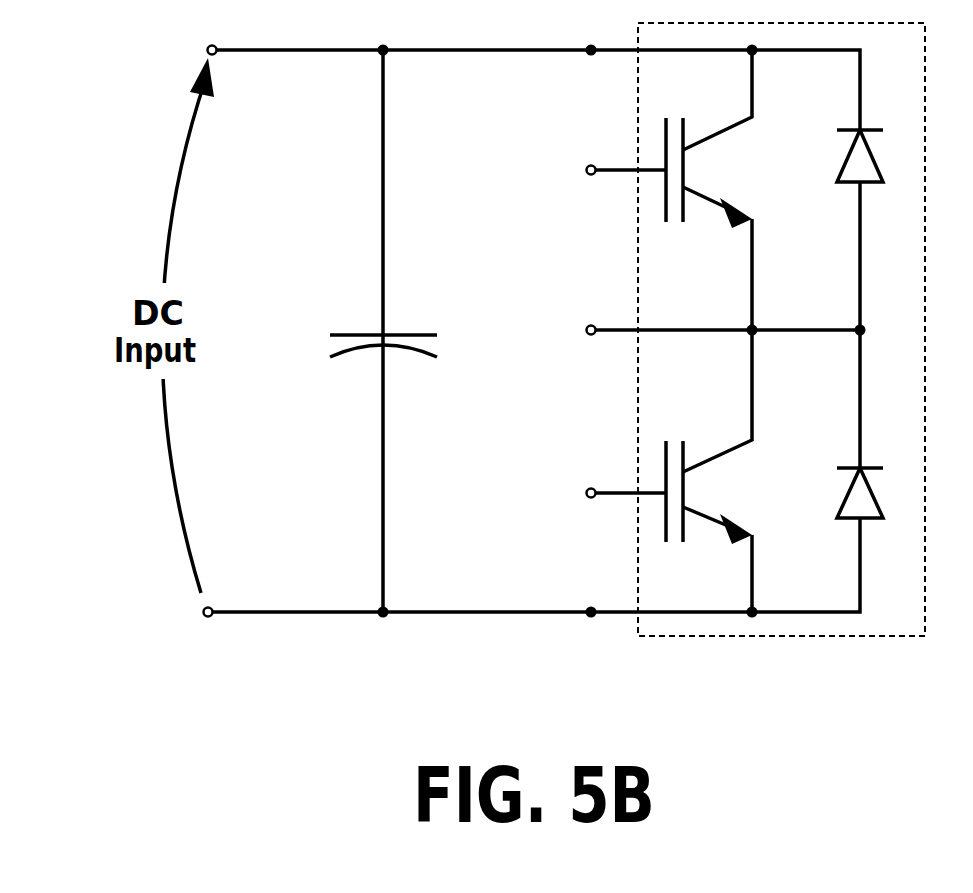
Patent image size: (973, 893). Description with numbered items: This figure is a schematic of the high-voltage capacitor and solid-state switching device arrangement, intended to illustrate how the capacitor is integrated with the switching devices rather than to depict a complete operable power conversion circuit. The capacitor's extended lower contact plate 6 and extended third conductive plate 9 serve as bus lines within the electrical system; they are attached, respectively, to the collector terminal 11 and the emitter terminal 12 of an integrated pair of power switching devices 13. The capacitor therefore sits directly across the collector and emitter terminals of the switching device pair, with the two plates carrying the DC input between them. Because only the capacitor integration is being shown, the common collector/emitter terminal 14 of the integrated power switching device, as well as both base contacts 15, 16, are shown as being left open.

The lower contact plate 6 is at (383, 29).
The third conductive plate 9 is at (383, 636).
The collector terminal 11 is at (590, 71).
The emitter terminal 12 is at (590, 634).
The integrated pair of power switching devices 13 is at (805, 329).
The common collector/emitter terminal 14 is at (643, 332).
The base contact 15 is at (600, 169).
The base contact 16 is at (599, 492).